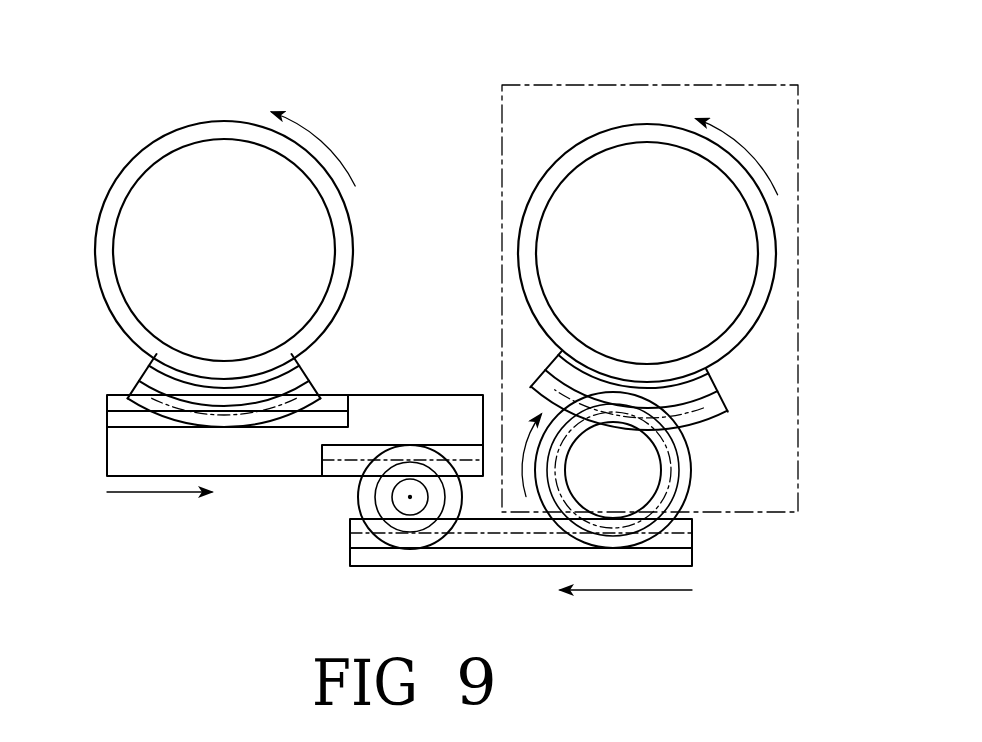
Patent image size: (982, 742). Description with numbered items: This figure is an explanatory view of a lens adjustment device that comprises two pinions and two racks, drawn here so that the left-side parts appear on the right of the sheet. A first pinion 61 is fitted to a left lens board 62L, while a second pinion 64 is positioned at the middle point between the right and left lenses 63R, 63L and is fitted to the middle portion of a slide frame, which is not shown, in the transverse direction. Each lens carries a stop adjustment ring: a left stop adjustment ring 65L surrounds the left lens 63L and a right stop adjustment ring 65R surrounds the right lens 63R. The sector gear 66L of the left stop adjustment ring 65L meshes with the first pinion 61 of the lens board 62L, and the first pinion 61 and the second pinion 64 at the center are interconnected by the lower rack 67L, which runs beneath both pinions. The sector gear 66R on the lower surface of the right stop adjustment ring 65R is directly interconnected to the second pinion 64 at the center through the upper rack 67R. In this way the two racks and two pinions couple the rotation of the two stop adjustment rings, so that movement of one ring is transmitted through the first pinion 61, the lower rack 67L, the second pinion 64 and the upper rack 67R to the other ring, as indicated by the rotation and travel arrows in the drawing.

The first pinion 61 is at (693, 478).
The left lens board 62L is at (520, 83).
The left lens 63L is at (628, 160).
The right lens 63R is at (185, 163).
The second pinion 64 is at (358, 498).
The left stop adjustment ring 65L is at (667, 128).
The right stop adjustment ring 65R is at (108, 185).
The sector gear 66L is at (728, 407).
The sector gear 66R is at (148, 372).
The lower rack 67L is at (452, 566).
The upper rack 67R is at (107, 440).